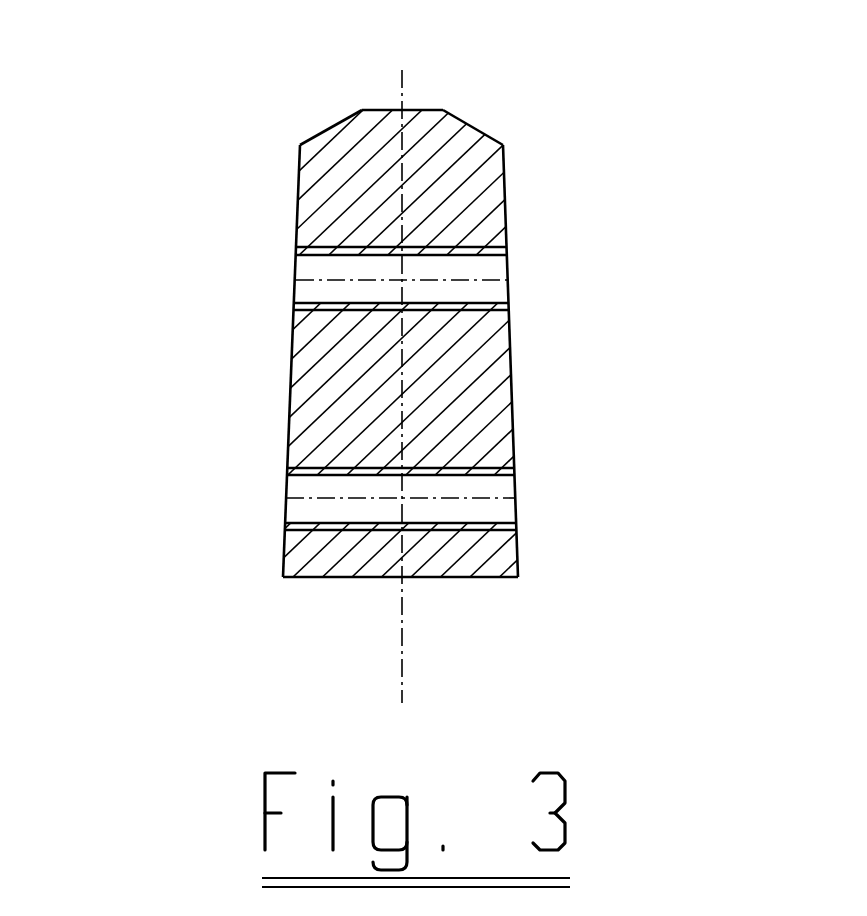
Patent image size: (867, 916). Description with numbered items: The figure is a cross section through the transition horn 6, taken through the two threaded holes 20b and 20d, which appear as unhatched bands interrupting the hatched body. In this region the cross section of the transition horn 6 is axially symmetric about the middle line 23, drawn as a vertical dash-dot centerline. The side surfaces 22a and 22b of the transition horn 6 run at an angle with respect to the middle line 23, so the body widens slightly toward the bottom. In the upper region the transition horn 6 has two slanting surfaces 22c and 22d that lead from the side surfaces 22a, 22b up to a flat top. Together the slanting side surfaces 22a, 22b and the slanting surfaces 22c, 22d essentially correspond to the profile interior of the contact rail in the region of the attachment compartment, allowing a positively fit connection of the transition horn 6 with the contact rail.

The transition horn 6 is at (323, 387).
The threaded hole 20b is at (473, 487).
The threaded hole 20d is at (477, 287).
The side surface 22a is at (505, 197).
The side surface 22b is at (297, 197).
The slanting surface 22c is at (477, 128).
The slanting surface 22d is at (320, 125).
The middle line 23 is at (403, 658).